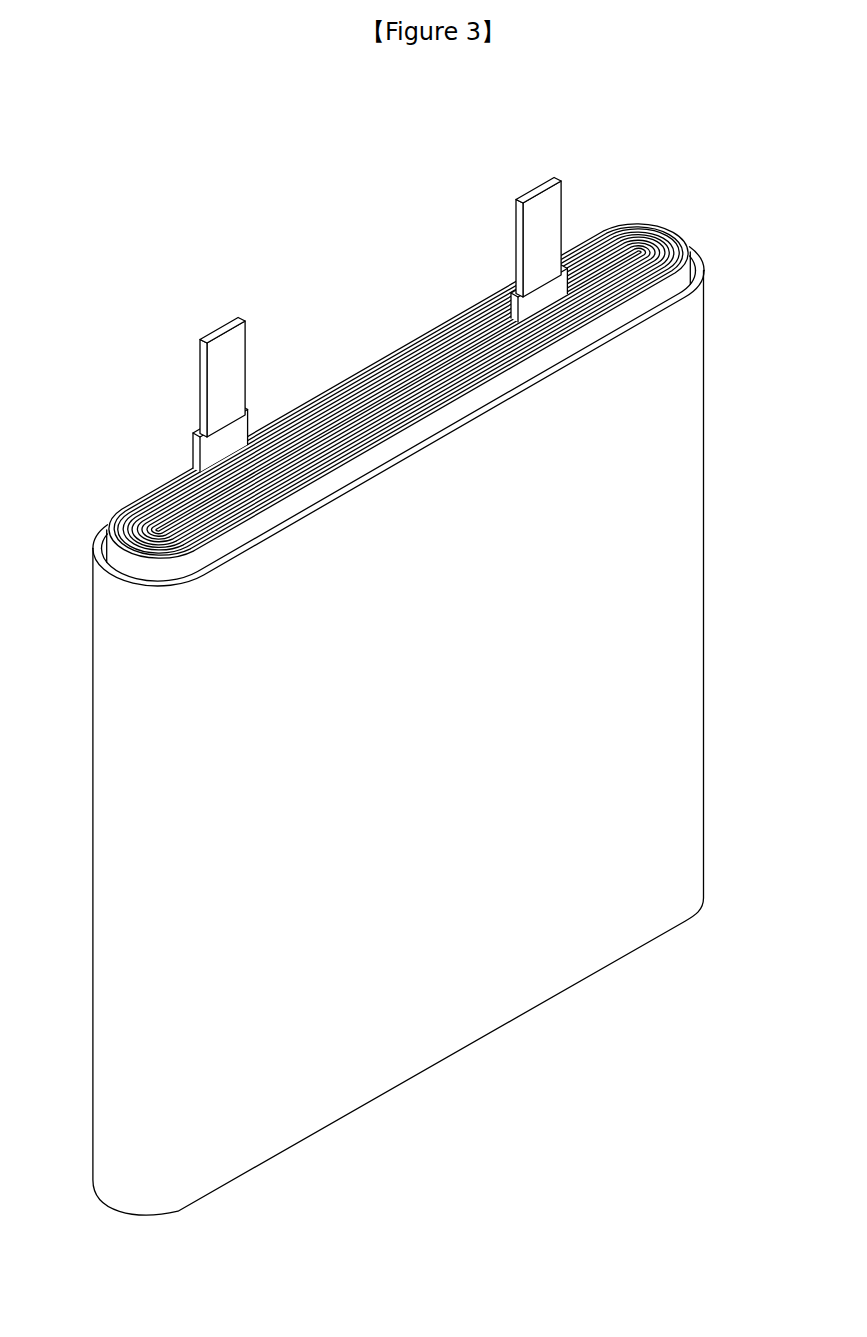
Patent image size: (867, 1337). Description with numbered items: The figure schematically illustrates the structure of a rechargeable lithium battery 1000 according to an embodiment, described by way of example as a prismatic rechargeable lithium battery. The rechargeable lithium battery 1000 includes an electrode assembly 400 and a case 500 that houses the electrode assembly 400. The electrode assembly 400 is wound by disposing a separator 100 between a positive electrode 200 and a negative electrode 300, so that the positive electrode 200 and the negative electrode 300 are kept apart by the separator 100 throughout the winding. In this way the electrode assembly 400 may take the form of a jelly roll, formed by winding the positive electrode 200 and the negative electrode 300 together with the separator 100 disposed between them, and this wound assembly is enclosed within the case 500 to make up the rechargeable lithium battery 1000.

The rechargeable lithium battery 1000 is at (312, 140).
The separator 100 is at (665, 222).
The positive electrode 200 is at (683, 228).
The negative electrode 300 is at (640, 232).
The electrode assembly 400 is at (436, 313).
The case 500 is at (690, 568).